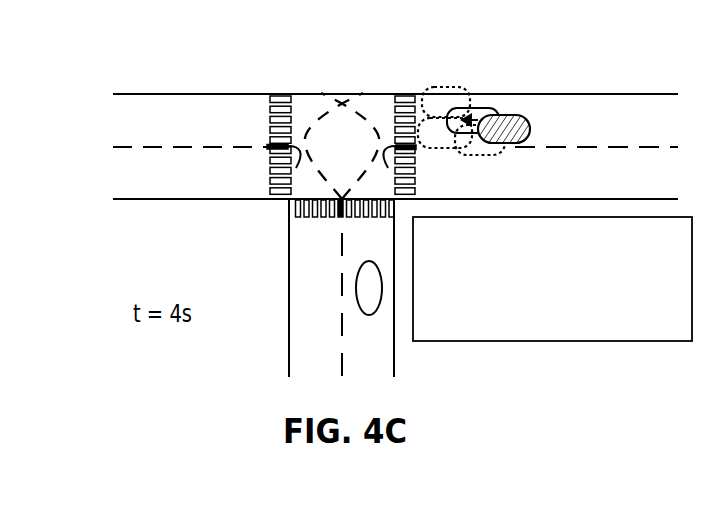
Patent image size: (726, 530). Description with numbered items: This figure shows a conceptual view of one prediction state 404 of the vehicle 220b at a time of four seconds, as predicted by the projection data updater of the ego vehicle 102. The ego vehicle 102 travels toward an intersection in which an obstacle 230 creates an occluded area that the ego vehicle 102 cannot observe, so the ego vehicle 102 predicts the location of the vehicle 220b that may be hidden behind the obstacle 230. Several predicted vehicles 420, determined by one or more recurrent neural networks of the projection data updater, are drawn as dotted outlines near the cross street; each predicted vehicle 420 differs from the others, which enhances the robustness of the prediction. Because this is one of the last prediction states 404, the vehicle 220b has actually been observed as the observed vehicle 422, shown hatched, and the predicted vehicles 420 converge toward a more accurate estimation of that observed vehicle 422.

The prediction state 404 is at (317, 61).
The ego vehicle 102 is at (355, 297).
The vehicle 220b is at (472, 102).
The predicted vehicles 420 is at (447, 148).
The observed vehicle 422 is at (528, 128).
The obstacle 230 is at (627, 290).